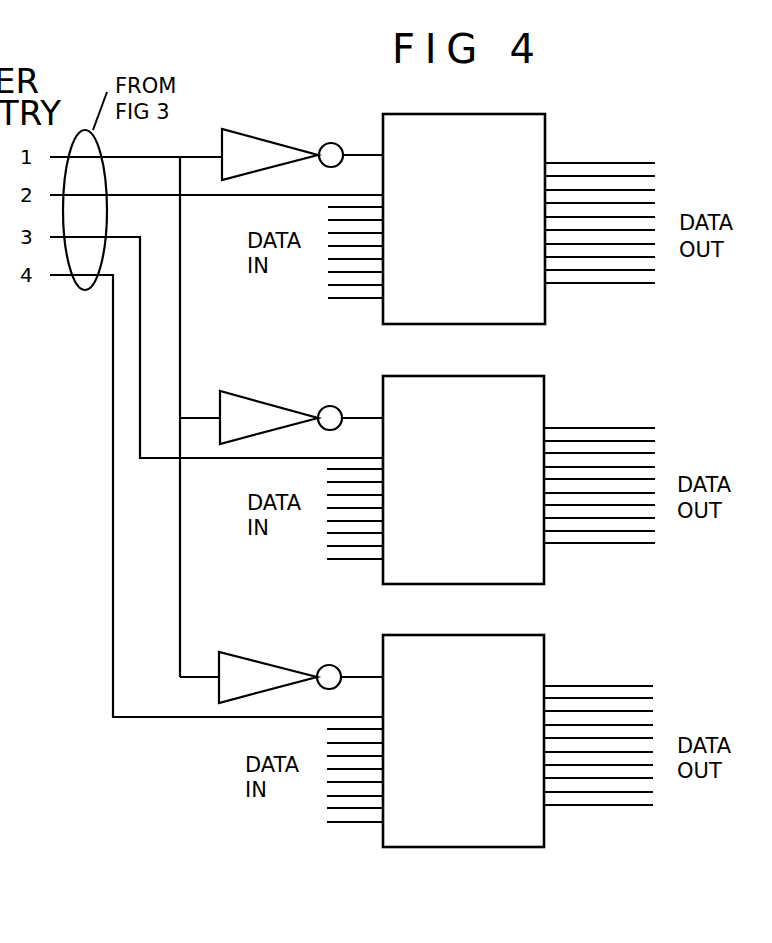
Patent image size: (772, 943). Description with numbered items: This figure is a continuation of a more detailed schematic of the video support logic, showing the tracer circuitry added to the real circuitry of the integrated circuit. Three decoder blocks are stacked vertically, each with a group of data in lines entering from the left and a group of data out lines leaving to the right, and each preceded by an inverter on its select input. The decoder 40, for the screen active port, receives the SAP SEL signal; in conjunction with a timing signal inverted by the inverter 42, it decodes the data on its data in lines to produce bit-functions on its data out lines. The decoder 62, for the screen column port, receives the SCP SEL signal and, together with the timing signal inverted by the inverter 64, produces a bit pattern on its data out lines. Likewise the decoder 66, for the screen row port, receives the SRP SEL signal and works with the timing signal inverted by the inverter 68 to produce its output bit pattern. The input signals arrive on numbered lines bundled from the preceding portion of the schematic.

The decoder 40 is at (548, 152).
The inverter 42 is at (260, 133).
The decoder 62 is at (547, 400).
The inverter 64 is at (268, 400).
The decoder 66 is at (546, 663).
The inverter 68 is at (248, 653).